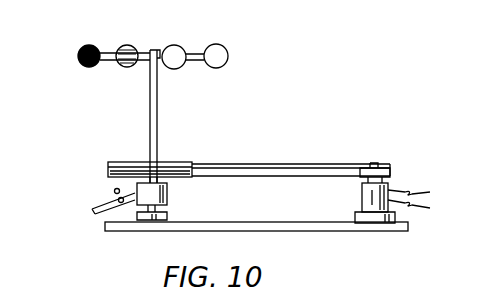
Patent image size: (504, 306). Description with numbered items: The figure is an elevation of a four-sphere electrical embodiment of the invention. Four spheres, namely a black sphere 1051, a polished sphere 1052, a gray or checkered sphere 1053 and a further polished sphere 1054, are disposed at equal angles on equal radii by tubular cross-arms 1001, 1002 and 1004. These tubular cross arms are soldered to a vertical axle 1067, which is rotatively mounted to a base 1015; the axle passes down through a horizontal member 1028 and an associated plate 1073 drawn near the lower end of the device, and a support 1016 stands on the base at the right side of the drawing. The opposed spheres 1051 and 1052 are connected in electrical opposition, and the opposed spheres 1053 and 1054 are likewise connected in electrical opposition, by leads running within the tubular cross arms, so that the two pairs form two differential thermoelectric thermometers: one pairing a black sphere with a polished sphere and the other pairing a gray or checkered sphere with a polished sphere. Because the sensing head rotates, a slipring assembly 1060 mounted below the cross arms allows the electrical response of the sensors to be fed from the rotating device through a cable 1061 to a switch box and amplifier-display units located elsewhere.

The black sphere 1051 is at (82, 48).
The tubular cross-arm 1001 is at (98, 66).
The gray or checkered sphere 1053 is at (124, 45).
The tubular cross-arm 1002 is at (158, 64).
The polished sphere 1054 is at (178, 45).
The tubular cross-arm 1004 is at (205, 67).
The polished sphere 1052 is at (227, 48).
The plate 1073 is at (128, 162).
The vertical axle 1067 is at (158, 132).
The horizontal bar 1028 is at (297, 164).
The slipring assembly 1060 is at (168, 195).
The cable 1061 is at (92, 211).
The support column 1016 is at (361, 190).
The base 1015 is at (260, 231).